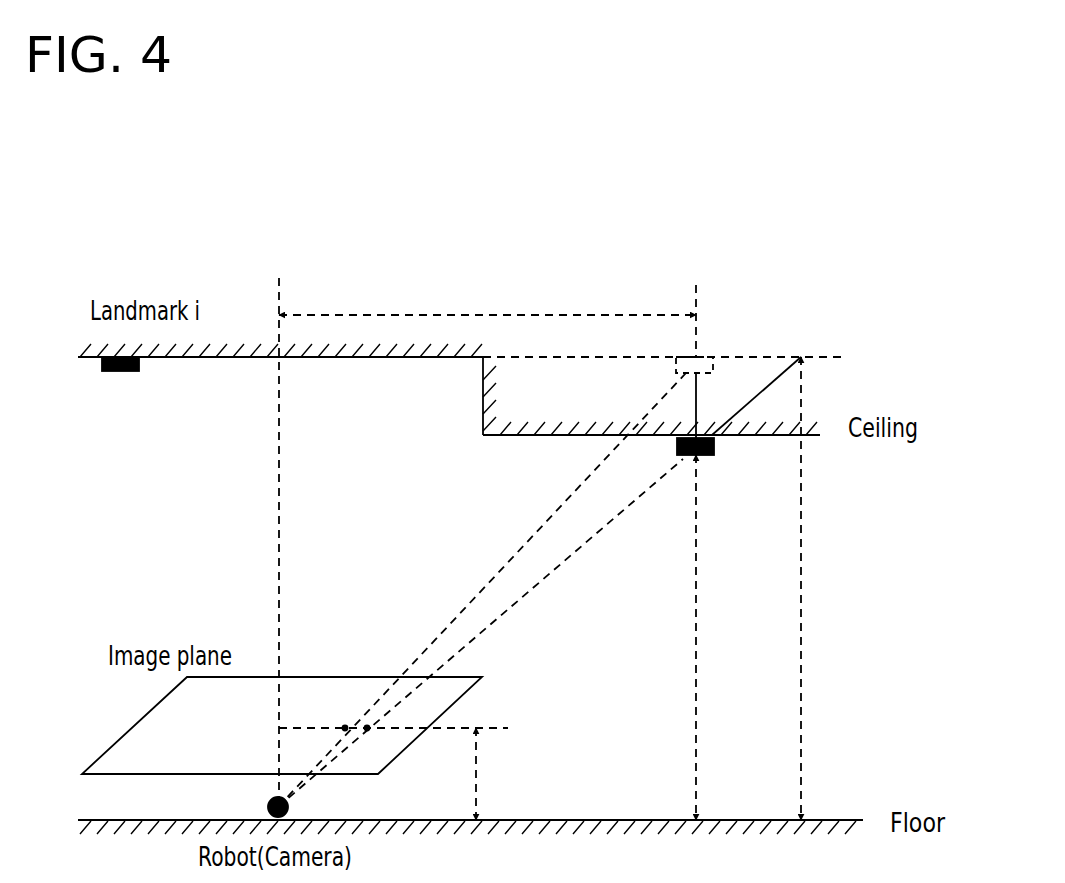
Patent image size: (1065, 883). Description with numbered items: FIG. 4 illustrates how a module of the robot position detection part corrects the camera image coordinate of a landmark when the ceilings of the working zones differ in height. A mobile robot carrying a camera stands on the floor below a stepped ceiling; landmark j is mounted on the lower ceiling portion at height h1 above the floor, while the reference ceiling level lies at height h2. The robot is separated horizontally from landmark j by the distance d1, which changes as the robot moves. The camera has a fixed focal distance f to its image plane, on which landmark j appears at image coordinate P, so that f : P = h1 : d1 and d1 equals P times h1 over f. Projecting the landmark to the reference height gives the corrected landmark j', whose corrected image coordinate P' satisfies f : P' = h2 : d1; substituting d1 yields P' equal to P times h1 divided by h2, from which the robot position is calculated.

The landmark j is at (702, 427).
The corrected landmark j' is at (705, 374).
The image coordinate P is at (366, 746).
The corrected image coordinate P' is at (342, 707).
The distance d1 is at (487, 295).
The ceiling height h1 is at (714, 637).
The ceiling height h2 is at (820, 588).
The focal distance f is at (491, 774).